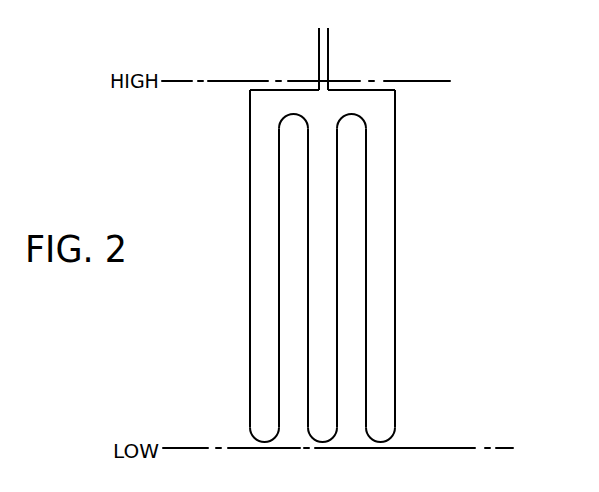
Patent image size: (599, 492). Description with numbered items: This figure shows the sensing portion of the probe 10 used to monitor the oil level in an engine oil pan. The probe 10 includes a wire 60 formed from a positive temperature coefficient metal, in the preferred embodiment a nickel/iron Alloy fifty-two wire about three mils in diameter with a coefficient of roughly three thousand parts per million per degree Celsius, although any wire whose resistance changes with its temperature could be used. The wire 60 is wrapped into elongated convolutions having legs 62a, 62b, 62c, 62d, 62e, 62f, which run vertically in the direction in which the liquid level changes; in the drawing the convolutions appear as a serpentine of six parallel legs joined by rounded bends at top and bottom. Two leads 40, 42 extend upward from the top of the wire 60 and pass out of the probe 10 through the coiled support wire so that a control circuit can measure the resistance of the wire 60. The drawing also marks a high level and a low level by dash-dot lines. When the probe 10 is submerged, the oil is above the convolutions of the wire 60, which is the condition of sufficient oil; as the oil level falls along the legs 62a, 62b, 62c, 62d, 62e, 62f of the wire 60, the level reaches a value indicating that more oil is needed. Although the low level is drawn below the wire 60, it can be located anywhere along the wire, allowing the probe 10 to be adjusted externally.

The probe 10 is at (477, 98).
The lead 40 is at (318, 53).
The lead 42 is at (330, 62).
The wire 60 is at (396, 333).
The leg 62a is at (250, 282).
The leg 62b is at (278, 226).
The leg 62c is at (308, 166).
The leg 62d is at (337, 233).
The leg 62e is at (366, 259).
The leg 62f is at (395, 285).